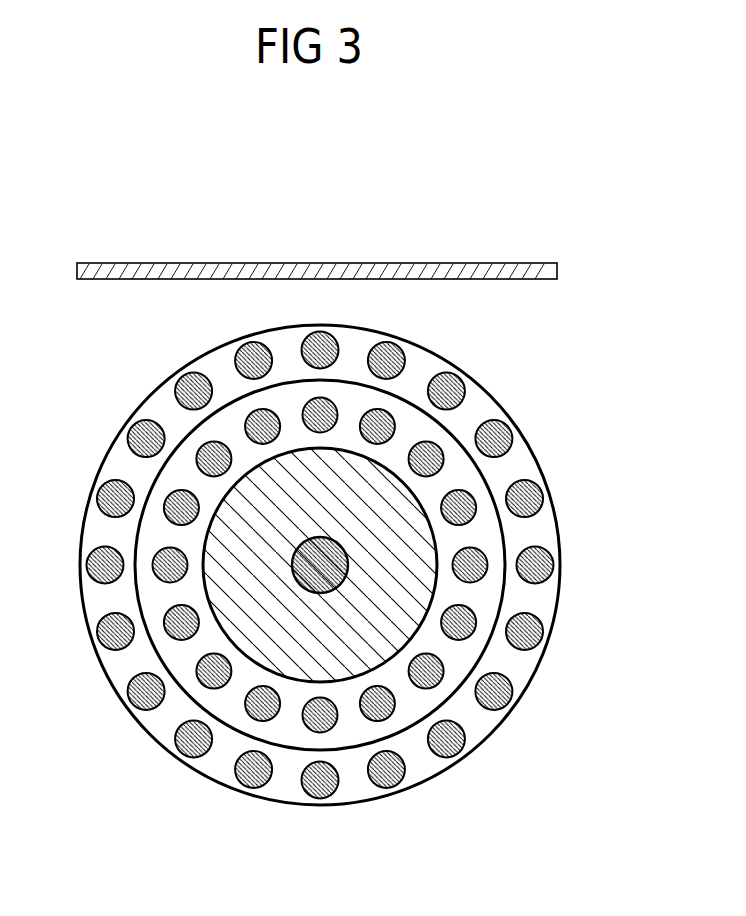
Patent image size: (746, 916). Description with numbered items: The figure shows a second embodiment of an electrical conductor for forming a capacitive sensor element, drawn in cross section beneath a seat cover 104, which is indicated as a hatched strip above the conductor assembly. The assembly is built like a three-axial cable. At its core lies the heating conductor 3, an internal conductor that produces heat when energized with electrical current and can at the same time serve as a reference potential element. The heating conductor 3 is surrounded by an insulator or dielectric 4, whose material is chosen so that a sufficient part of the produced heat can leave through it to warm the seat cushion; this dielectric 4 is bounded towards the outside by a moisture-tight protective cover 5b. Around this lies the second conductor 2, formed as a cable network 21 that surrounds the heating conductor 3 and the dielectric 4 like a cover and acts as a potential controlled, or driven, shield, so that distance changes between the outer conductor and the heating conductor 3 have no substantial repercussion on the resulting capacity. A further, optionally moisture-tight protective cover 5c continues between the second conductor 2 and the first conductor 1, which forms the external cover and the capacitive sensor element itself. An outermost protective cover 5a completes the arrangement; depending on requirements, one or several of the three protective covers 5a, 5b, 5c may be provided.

The seat cover 104 is at (110, 272).
The first conductor 1 is at (350, 602).
The second conductor 2 is at (334, 565).
The heating conductor 3 is at (342, 546).
The dielectric 4 is at (343, 606).
The protective cover 5a is at (562, 531).
The protective cover 5b is at (438, 535).
The protective cover 5c is at (507, 588).
The cable network 21 is at (433, 675).